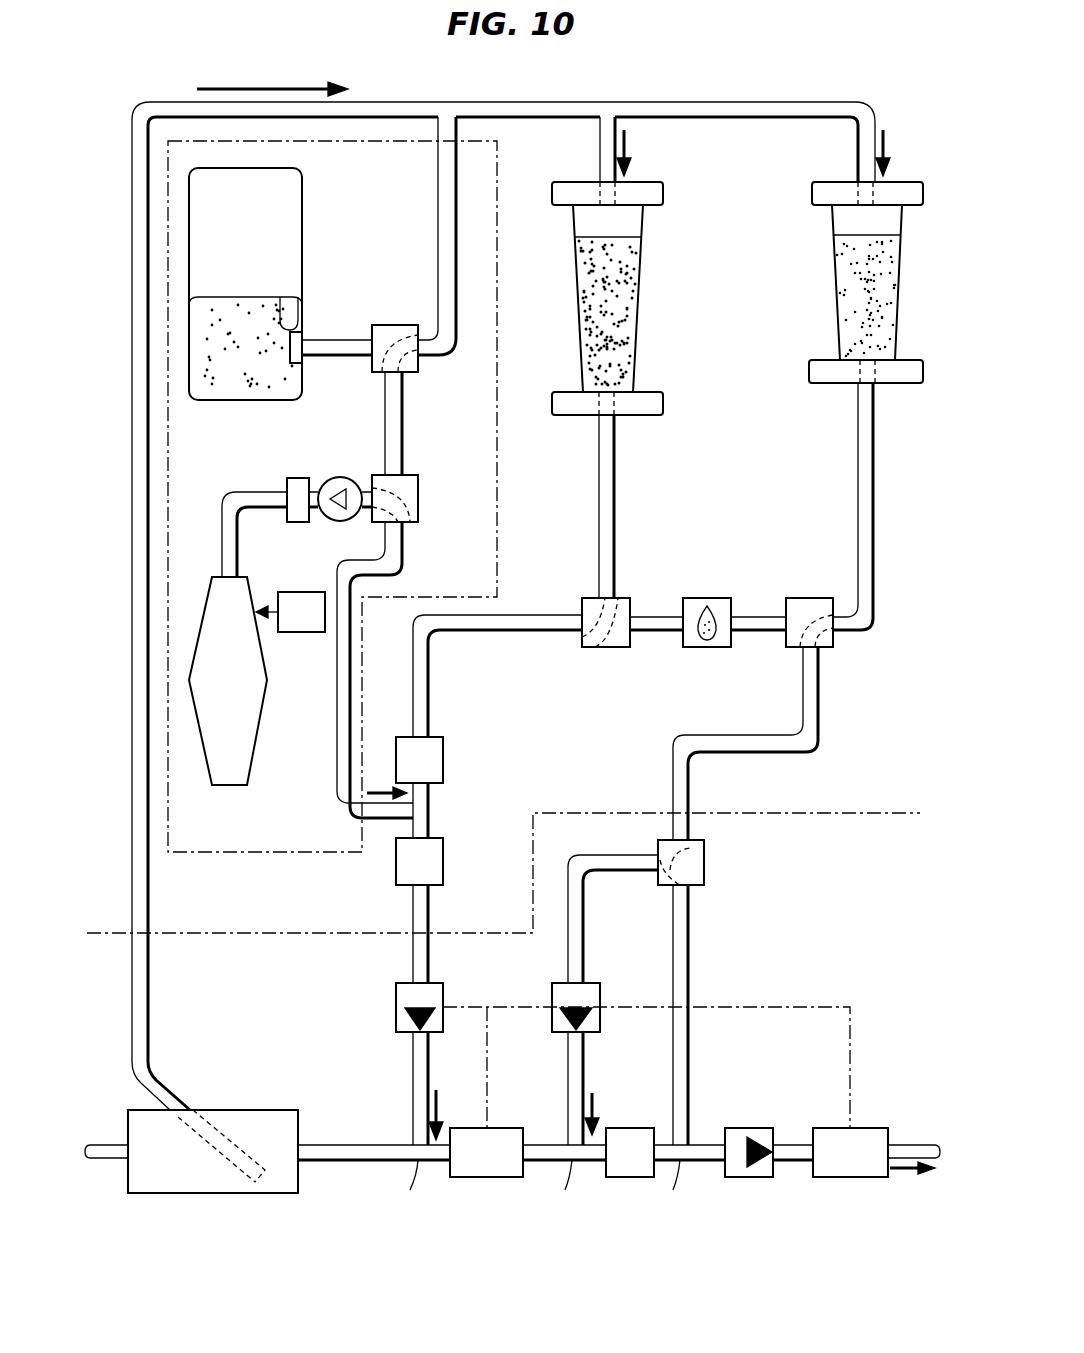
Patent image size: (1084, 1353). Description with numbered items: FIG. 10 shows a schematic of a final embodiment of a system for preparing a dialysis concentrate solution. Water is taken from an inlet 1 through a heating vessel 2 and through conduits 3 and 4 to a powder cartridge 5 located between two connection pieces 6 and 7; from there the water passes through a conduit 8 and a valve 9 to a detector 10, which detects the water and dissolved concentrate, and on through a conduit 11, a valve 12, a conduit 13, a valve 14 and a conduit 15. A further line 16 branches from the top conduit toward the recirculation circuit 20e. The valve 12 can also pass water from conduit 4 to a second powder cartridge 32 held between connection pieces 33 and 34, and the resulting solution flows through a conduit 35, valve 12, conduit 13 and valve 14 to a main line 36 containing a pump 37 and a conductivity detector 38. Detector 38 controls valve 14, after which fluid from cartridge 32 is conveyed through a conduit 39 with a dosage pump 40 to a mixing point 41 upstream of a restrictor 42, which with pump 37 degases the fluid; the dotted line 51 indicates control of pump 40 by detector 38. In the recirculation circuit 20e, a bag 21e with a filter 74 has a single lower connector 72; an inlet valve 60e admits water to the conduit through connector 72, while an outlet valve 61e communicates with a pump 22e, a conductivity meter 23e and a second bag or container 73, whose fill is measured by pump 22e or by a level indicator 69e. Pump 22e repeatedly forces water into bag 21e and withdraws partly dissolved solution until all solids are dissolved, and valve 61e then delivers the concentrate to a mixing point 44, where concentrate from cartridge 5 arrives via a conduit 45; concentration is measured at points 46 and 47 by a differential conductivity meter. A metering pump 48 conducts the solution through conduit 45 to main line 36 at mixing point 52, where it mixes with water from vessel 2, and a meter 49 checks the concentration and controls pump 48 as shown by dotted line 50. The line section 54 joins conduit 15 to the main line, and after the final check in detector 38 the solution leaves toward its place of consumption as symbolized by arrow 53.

The inlet 1 is at (110, 1160).
The heating vessel 2 is at (243, 1110).
The conduit 3 is at (148, 905).
The conduit 4 is at (565, 102).
The powder cartridge 5 is at (637, 328).
The connection piece 6 is at (647, 182).
The connection piece 7 is at (657, 392).
The conduit 8 is at (614, 498).
The valve 9 is at (630, 600).
The detector 10 is at (683, 647).
The conduit 11 is at (753, 615).
The valve 12 is at (807, 598).
The conduit 13 is at (818, 695).
The valve 14 is at (704, 860).
The conduit 15 is at (688, 1068).
The feed line 16 is at (452, 102).
The recirculation circuit 20e is at (160, 582).
The bag 21e is at (189, 263).
The pump 22e is at (340, 477).
The conductivity meter 23e is at (295, 478).
The powder cartridge 32 is at (892, 300).
The connection piece 33 is at (913, 182).
The connection piece 34 is at (910, 360).
The conduit 35 is at (873, 498).
The main line 36 is at (362, 1145).
The pump 37 is at (735, 1177).
The detector 38 is at (847, 1177).
The conduit 39 is at (583, 932).
The dosage pump 40 is at (600, 983).
The mixing point 41 is at (559, 1186).
The restrictor 42 is at (617, 1177).
The mixing point 44 is at (420, 810).
The conduit 45 is at (428, 688).
The measuring point 46 is at (443, 740).
The measuring point 47 is at (396, 870).
The pump 48 is at (443, 983).
The meter 49 is at (477, 1177).
The dotted line 50 is at (487, 1070).
The dotted line 51 is at (850, 1035).
The mixing point 52 is at (402, 1186).
The arrow 53 is at (913, 1145).
The line section 54 is at (665, 1186).
The inlet valve 60e is at (418, 372).
The outlet valve 61e is at (418, 522).
The level indicator 69e is at (300, 592).
The lower connector 72 is at (302, 340).
The second bag 73 is at (260, 737).
The filter 74 is at (284, 320).